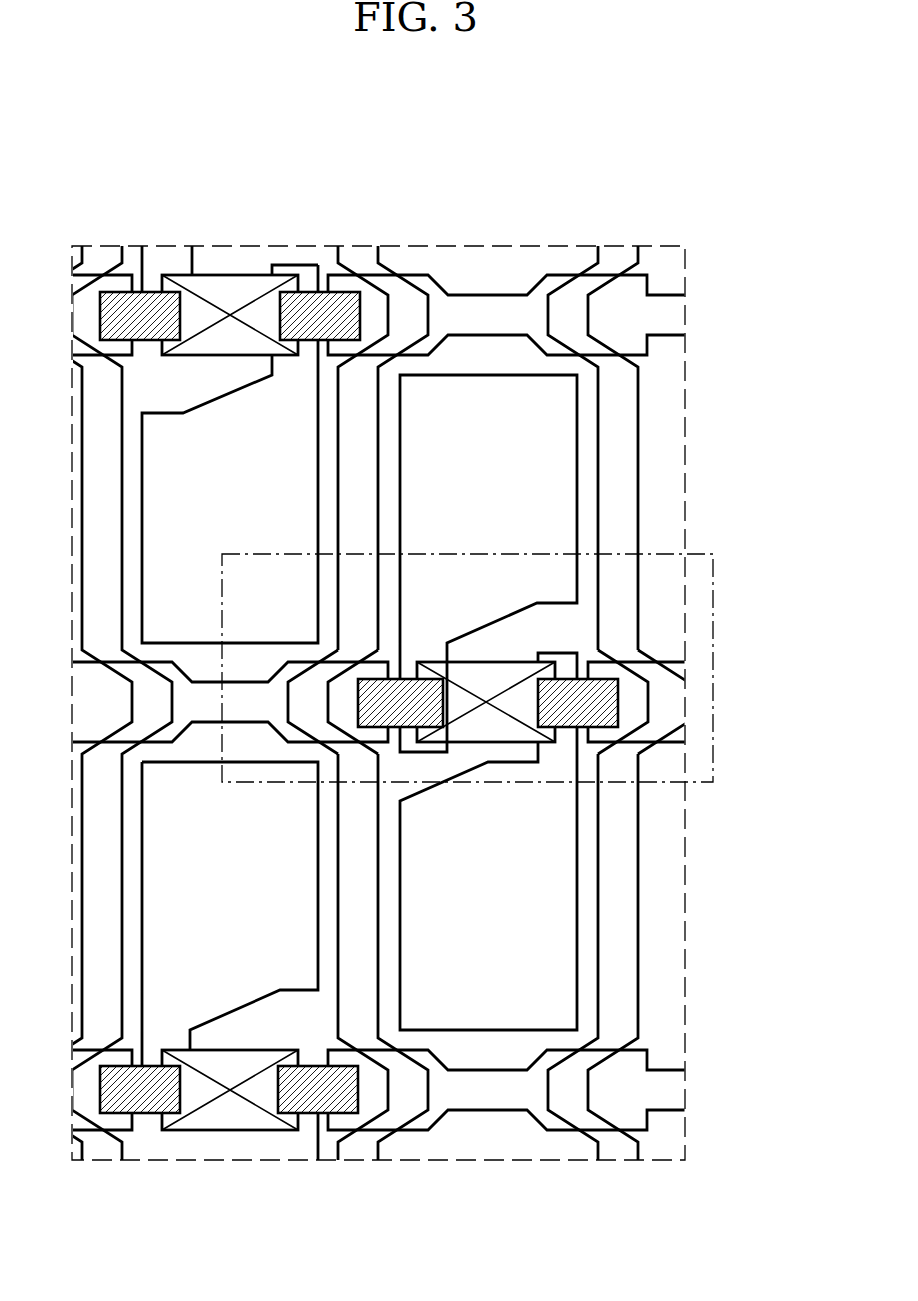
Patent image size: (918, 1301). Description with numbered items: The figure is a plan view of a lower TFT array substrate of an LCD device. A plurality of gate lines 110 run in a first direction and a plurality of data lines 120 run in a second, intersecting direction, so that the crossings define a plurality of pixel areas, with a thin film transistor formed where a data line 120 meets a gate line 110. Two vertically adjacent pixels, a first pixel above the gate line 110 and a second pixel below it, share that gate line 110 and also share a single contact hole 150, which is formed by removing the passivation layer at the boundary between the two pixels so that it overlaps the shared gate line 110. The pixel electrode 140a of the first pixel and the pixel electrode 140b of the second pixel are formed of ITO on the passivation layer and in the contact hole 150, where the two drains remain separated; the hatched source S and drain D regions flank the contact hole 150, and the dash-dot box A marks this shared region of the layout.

The gate line 110 is at (647, 315).
The data line 120 is at (618, 490).
The pixel electrode 140a is at (577, 433).
The pixel electrode 140b is at (577, 893).
The contact hole 150 is at (229, 291).
The source electrode S is at (300, 698).
The drain electrode D is at (357, 695).
The region A is at (715, 595).